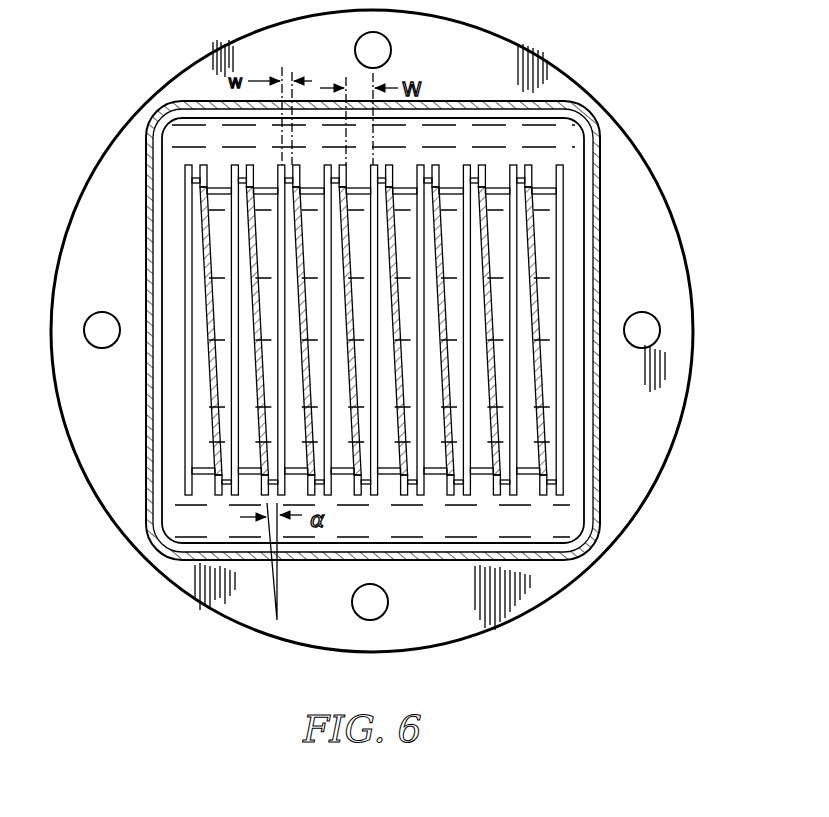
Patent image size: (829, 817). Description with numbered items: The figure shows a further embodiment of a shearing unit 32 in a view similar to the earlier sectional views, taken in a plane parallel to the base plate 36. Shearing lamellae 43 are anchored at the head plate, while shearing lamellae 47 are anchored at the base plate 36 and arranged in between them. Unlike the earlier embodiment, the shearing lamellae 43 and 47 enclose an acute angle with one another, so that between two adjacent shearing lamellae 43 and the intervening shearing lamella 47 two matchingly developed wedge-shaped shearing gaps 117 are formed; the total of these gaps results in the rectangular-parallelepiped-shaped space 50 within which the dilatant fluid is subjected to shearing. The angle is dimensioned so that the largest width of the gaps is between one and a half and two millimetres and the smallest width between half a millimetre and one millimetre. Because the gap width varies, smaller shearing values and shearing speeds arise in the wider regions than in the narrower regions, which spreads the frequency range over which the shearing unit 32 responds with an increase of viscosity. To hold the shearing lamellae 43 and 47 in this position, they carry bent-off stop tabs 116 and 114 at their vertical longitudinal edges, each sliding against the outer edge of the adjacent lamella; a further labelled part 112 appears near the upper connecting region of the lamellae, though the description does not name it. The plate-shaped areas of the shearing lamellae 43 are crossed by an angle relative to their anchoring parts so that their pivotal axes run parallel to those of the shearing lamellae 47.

The shearing unit 32 is at (583, 71).
The base plate 36 is at (507, 588).
The bent-off stop tab 116 is at (194, 178).
The shearing lamella 43 is at (303, 292).
The rectangular-parallelepiped-shaped space 50 is at (491, 277).
The bent-off stop tab 114 is at (214, 189).
The upper connecting bar 112 is at (427, 179).
The shearing lamella 47 is at (275, 435).
The wedge-shaped shearing gap 117 is at (432, 452).